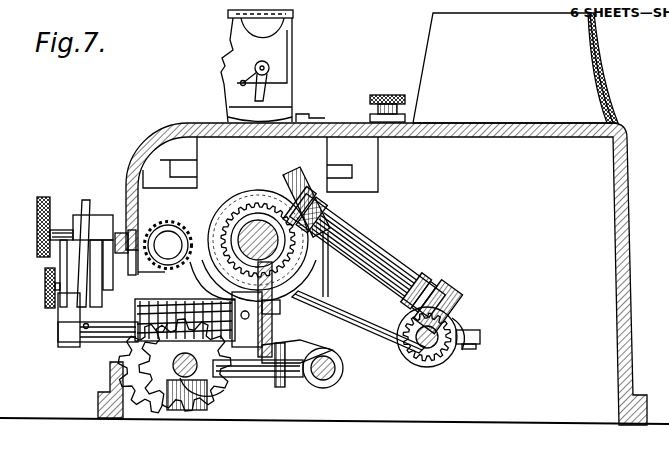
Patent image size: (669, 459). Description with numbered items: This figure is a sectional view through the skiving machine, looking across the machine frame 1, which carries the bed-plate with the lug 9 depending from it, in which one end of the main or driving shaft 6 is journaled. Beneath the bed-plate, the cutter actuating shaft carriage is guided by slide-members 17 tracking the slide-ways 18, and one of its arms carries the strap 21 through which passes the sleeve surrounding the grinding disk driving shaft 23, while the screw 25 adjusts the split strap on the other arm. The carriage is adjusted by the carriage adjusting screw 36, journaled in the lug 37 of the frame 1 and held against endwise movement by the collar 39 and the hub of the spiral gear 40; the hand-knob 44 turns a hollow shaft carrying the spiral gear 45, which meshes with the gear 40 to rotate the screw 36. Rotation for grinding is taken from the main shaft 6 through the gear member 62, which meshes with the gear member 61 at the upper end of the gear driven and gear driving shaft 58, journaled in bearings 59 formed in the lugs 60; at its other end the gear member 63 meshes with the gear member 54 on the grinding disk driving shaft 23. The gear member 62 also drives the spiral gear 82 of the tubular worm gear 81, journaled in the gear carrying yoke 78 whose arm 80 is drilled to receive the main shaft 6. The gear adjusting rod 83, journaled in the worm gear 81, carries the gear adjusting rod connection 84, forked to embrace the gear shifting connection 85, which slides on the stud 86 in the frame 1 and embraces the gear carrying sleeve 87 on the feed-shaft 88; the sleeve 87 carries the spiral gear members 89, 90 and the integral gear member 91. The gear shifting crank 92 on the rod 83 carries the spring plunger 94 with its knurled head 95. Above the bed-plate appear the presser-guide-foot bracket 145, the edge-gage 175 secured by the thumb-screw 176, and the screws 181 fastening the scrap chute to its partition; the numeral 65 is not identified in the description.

The machine frame 1 is at (626, 158).
The strap 21 is at (462, 125).
The main or driving shaft 6 is at (285, 252).
The lug 9 is at (190, 209).
The slide-members 17 is at (186, 167).
The slide-ways 18 is at (153, 178).
The grinding disk driving shaft 23 is at (436, 366).
The screw 25 is at (481, 337).
The carriage adjusting screw 36 is at (168, 245).
The lug 37 is at (220, 230).
The collar 39 is at (212, 281).
The spiral gear 40 is at (173, 224).
The hand-knob 44 is at (58, 330).
The spiral gear 45 is at (139, 253).
The gear member 54 is at (450, 333).
The gear driven and gear driving shaft 58 is at (380, 252).
The bearings 59 is at (333, 207).
The lugs 60 is at (348, 208).
The gear member 61 is at (294, 171).
The gear member 62 is at (257, 203).
The gear member 63 is at (468, 293).
The knob 65 is at (45, 284).
The gear carrying yoke 78 is at (262, 282).
The arm 80 is at (272, 290).
The tubular worm gear 81 is at (137, 312).
The spiral gear 82 is at (266, 331).
The gear adjusting rod 83 is at (300, 313).
The gear adjusting rod connection 84 is at (330, 346).
The gear shifting connection 85 is at (254, 380).
The stud 86 is at (322, 386).
The gear carrying sleeve 87 is at (185, 320).
The feed-shaft 88 is at (174, 408).
The spiral gear member 89 is at (143, 350).
The spiral gear member 90 is at (160, 384).
The gear member 91 is at (161, 382).
The gear shifting crank 92 is at (86, 200).
The spring plunger 94 is at (121, 216).
The knurled head 95 is at (42, 197).
The presser-guide-foot bracket 145 is at (285, 101).
The edge-gage 175 is at (325, 113).
The thumb-screw 176 is at (386, 98).
The screws 181 is at (109, 248).